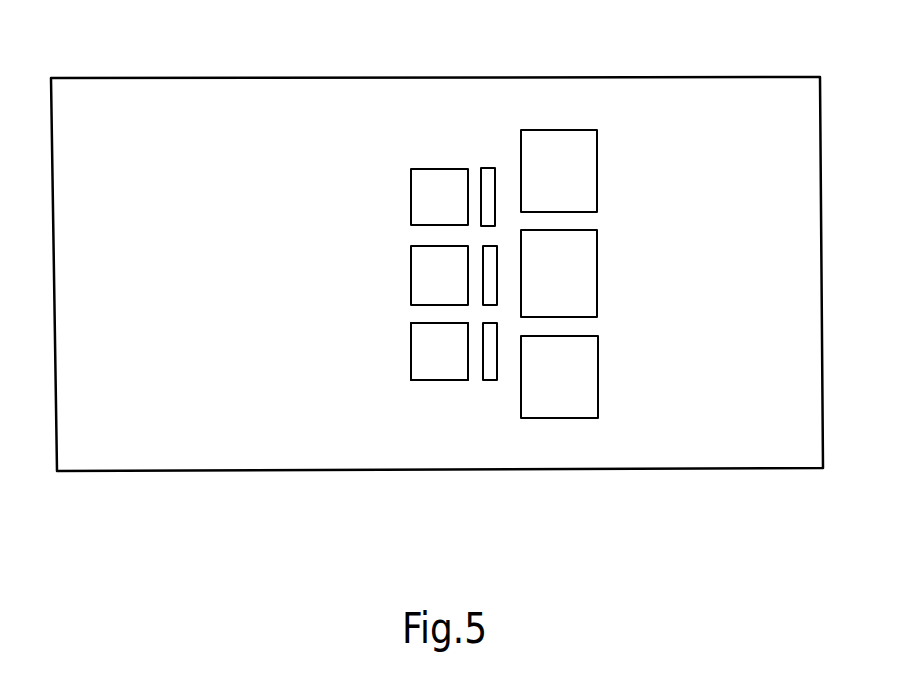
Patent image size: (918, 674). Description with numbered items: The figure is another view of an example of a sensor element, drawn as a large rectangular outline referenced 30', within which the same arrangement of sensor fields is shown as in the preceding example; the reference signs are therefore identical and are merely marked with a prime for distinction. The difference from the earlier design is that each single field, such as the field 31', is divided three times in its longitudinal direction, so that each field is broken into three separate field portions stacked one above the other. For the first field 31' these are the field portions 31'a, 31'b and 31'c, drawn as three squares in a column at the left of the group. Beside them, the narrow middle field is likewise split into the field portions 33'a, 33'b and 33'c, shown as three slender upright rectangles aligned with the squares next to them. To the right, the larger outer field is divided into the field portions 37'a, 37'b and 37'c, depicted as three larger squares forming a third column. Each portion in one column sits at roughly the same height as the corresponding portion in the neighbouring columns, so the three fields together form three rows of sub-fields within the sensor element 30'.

The carrier substrate 30' is at (437, 325).
The field 31' is at (427, 426).
The field portion 31'a is at (386, 184).
The field portion 31'b is at (393, 269).
The field portion 31'c is at (393, 351).
The field portion 33'a is at (463, 124).
The field portion 33'b is at (523, 164).
The field portion 33'c is at (474, 428).
The field portion 37'a is at (612, 169).
The field portion 37'b is at (609, 265).
The field portion 37'c is at (559, 432).